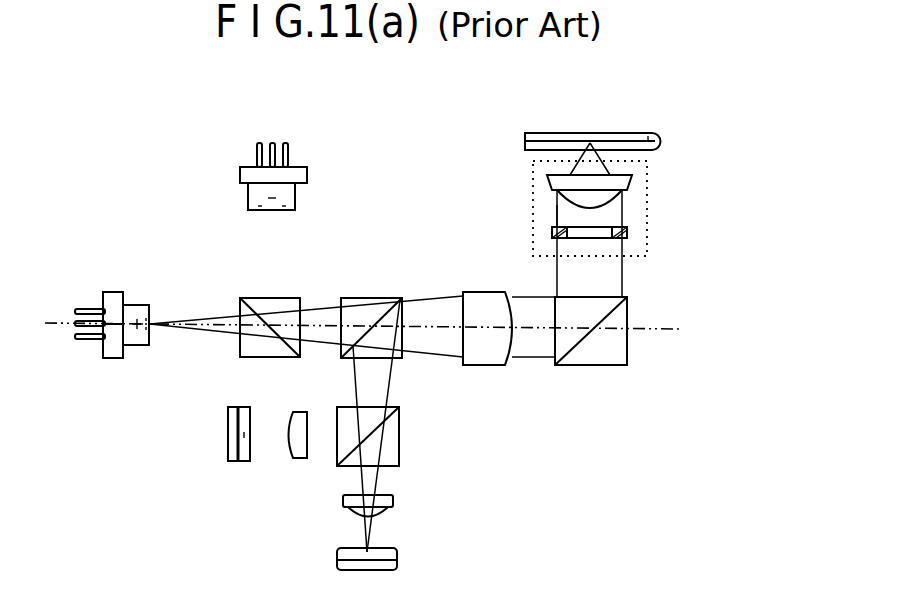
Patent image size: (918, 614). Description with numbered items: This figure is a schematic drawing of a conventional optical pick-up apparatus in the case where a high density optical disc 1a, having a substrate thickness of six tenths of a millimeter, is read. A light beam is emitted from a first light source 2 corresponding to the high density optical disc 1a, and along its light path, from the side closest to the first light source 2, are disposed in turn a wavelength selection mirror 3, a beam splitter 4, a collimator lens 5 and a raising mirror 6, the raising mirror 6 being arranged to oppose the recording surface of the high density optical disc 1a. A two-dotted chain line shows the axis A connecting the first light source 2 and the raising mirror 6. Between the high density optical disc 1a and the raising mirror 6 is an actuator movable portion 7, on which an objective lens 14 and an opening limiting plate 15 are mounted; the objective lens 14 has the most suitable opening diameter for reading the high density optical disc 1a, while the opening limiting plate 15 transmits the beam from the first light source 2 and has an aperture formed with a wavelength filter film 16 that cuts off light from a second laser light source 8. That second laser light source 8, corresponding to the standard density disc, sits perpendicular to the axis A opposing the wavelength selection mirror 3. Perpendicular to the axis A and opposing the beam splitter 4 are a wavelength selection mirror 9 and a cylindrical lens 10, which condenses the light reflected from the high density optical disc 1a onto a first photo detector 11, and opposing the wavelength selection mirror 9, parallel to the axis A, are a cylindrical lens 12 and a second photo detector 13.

The high density optical disc 1a is at (654, 137).
The first light source 2 is at (108, 300).
The wavelength selection mirror 3 is at (257, 302).
The beam splitter 4 is at (367, 313).
The collimator lens 5 is at (480, 318).
The raising mirror 6 is at (605, 340).
The actuator movable portion 7 is at (647, 200).
The second laser light source 8 is at (240, 172).
The wavelength selection mirror 9 is at (392, 436).
The cylindrical lens 10 is at (383, 504).
The first photo detector 11 is at (380, 556).
The cylindrical lens 12 is at (291, 452).
The second photo detector 13 is at (228, 437).
The objective lens 14 is at (547, 180).
The opening limiting plate 15 is at (600, 233).
The wavelength filter film 16 is at (562, 230).
The axis A is at (631, 330).